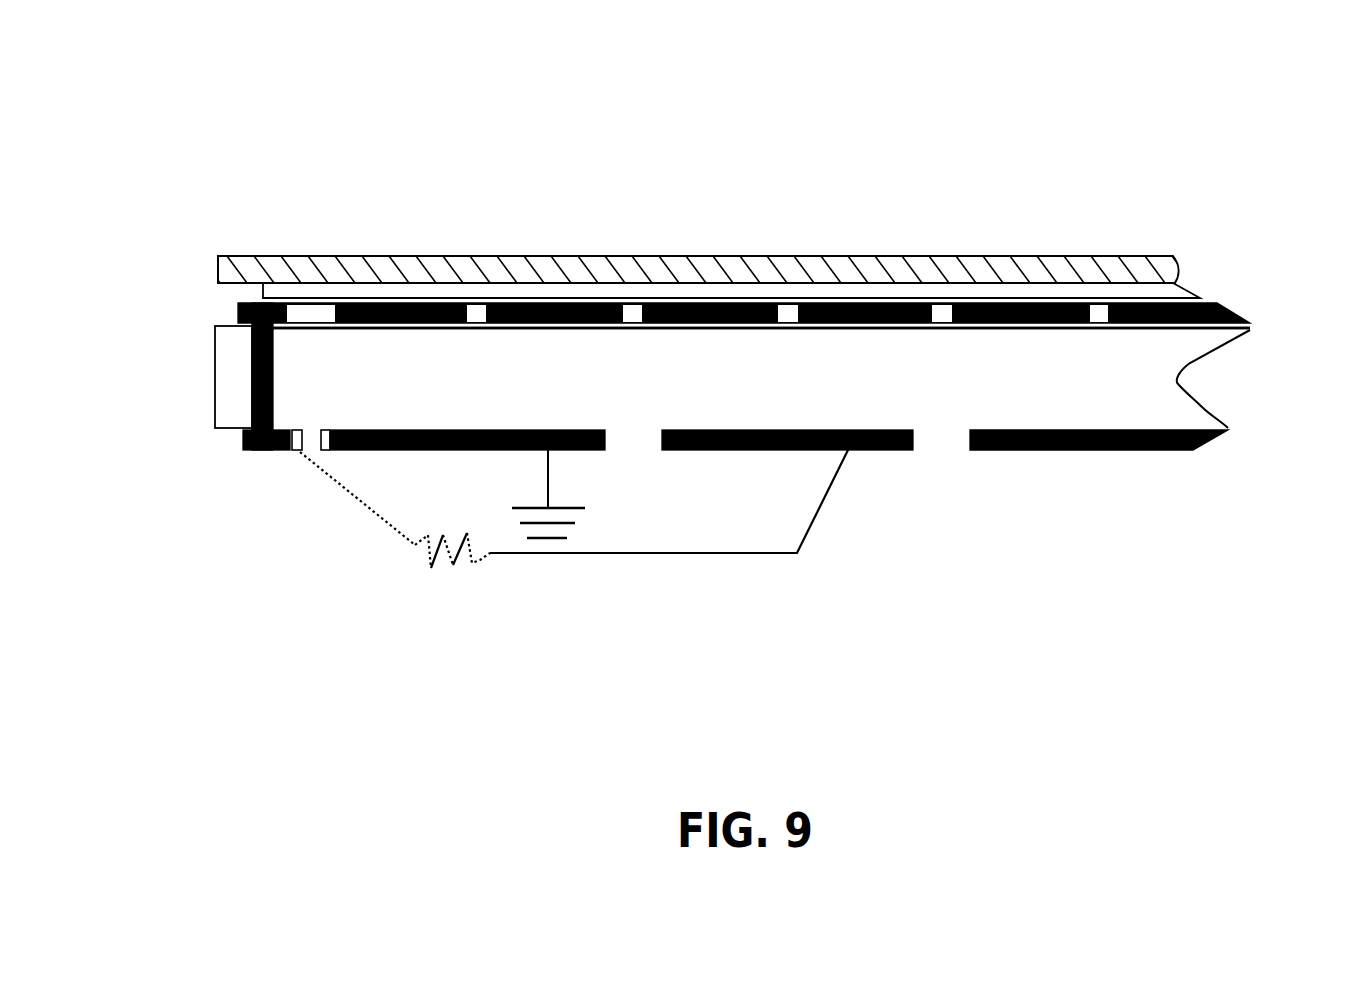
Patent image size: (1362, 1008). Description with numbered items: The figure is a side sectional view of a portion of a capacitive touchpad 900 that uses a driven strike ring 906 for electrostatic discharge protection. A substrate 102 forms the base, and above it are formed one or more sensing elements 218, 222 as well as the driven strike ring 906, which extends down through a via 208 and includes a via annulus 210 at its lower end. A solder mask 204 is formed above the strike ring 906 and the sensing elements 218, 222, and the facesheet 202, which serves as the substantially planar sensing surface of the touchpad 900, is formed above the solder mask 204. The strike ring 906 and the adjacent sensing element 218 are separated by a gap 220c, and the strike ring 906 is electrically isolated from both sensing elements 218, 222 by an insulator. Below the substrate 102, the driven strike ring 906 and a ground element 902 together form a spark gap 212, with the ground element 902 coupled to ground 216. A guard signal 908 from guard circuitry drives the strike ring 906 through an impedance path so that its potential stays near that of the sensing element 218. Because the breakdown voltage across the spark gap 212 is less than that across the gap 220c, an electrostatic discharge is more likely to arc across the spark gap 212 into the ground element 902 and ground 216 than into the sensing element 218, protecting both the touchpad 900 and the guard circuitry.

The capacitive touchpad 900 is at (367, 70).
The facesheet 202 is at (705, 188).
The solder mask 204 is at (1190, 297).
The driven strike ring 906 is at (238, 315).
The gap 220c is at (337, 245).
The substrate 102 is at (1178, 388).
The sensing element 218 is at (375, 328).
The sensing element 222 is at (552, 328).
The via 208 is at (238, 375).
The via annulus 210 is at (232, 460).
The spark gap 212 is at (318, 478).
The ground element 902 is at (435, 452).
The ground 216 is at (585, 508).
The guard signal 908 is at (675, 607).